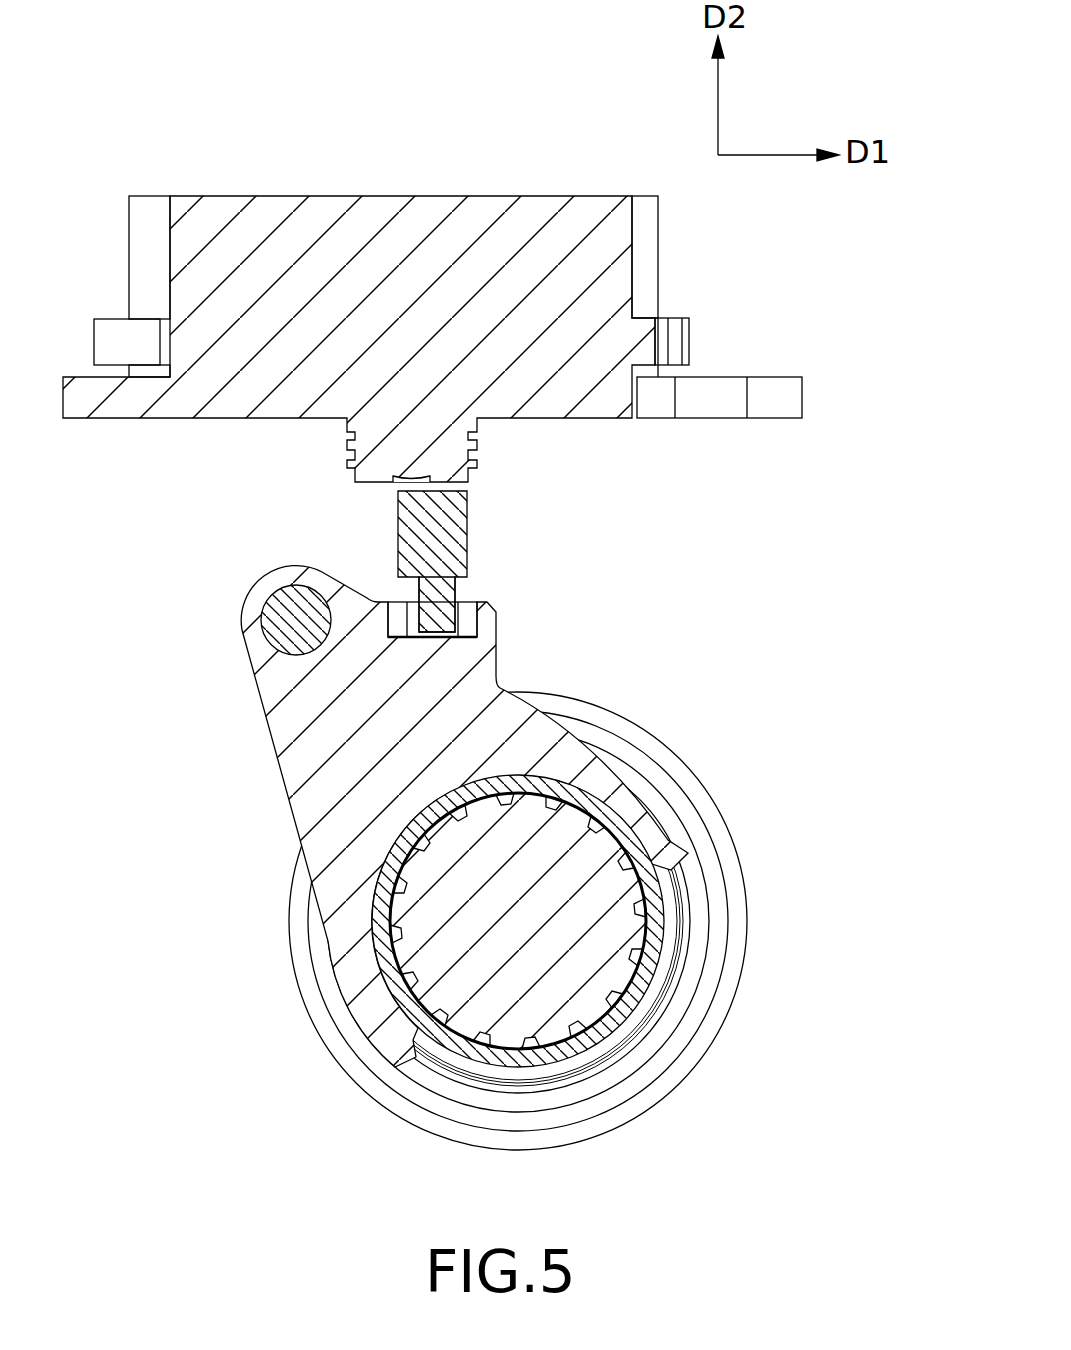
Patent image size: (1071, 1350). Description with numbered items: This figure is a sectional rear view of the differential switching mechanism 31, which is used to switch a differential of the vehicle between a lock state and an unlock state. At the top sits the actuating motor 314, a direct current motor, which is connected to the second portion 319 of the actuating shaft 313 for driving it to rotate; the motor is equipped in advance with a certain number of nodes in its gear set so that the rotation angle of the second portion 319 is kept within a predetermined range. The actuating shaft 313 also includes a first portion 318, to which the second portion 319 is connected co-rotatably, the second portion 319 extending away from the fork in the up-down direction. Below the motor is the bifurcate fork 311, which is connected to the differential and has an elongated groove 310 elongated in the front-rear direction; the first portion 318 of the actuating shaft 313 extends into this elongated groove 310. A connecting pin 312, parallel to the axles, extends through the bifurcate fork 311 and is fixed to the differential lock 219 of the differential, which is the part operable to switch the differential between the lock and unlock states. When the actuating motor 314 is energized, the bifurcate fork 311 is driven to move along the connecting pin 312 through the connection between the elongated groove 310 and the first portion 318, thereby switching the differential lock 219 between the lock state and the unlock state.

The differential switching mechanism 31 is at (432, 271).
The actuating motor 314 is at (330, 210).
The actuating shaft 313 is at (416, 556).
The second portion 319 is at (516, 553).
The first portion 318 is at (470, 609).
The elongated groove 310 is at (456, 593).
The connecting pin 312 is at (280, 615).
The bifurcate fork 311 is at (295, 762).
The differential lock 219 is at (655, 890).